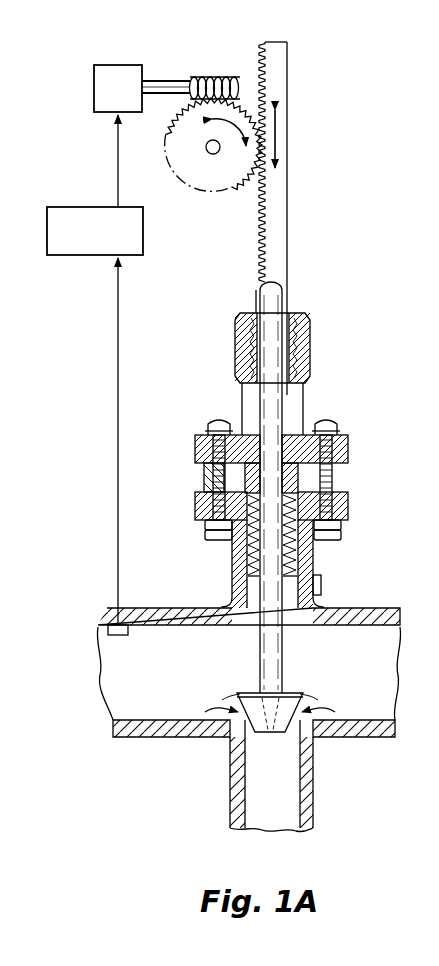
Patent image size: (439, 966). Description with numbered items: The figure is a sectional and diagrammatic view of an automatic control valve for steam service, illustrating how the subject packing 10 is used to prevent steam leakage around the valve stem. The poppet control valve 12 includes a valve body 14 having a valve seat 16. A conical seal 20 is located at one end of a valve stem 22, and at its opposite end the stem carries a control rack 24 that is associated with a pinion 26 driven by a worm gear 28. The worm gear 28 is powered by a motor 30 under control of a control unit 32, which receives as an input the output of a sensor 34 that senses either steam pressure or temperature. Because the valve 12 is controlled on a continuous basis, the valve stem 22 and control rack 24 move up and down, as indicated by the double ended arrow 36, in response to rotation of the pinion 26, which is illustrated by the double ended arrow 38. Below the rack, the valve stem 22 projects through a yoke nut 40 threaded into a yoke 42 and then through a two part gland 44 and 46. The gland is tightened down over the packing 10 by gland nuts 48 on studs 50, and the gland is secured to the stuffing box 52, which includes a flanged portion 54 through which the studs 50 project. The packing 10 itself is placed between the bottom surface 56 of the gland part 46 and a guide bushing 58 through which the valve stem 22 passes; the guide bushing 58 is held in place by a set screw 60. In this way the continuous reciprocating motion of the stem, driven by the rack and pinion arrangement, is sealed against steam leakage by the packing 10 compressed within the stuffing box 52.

The packing 10 is at (302, 512).
The poppet control valve 12 is at (352, 607).
The valve body 14 is at (158, 608).
The valve seat 16 is at (315, 739).
The conical seal 20 is at (238, 697).
The valve stem 22 is at (283, 293).
The control rack 24 is at (289, 186).
The pinion 26 is at (240, 174).
The worm gear 28 is at (214, 77).
The motor 30 is at (116, 65).
The control unit 32 is at (88, 207).
The sensor 34 is at (128, 633).
The double ended arrow 36 is at (284, 138).
The double ended arrow 38 is at (209, 138).
The yoke nut 40 is at (298, 318).
The yoke 42 is at (311, 349).
The gland part 44 is at (343, 438).
The gland part 46 is at (330, 477).
The gland nuts 48 is at (207, 428).
The studs 50 is at (205, 479).
The stuffing box 52 is at (318, 551).
The flanged portion 54 is at (347, 509).
The bottom surface 56 is at (197, 512).
The guide bushing 58 is at (247, 591).
The set screw 60 is at (322, 586).